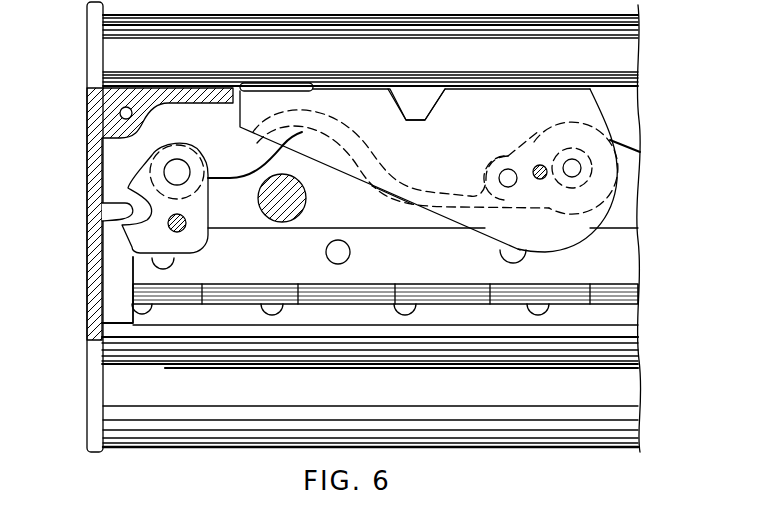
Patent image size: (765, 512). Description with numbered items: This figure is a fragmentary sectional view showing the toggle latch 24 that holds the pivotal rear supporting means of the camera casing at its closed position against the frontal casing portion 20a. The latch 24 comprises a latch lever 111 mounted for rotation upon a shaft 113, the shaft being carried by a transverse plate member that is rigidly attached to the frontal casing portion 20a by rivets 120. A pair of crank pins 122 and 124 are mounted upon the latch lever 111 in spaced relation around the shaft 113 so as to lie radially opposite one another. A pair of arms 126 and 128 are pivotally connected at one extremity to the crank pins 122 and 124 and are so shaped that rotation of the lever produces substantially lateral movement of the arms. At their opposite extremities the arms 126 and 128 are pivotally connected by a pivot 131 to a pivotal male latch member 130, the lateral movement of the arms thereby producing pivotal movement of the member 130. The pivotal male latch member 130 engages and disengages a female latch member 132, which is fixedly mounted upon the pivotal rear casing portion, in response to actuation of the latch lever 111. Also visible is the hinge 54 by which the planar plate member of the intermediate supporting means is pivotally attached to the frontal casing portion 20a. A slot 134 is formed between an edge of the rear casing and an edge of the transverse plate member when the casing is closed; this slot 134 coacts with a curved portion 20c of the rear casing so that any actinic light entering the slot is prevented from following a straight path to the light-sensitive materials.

The frontal casing portion 20a is at (88, 191).
The curved portion of casing 20c is at (628, 335).
The toggle latch 24 is at (118, 175).
The hinge 54 is at (366, 283).
The latch lever 111 is at (344, 95).
The shaft 113 is at (539, 165).
The rivets 120 is at (520, 254).
The crank pin 122 is at (496, 174).
The crank pin 124 is at (584, 177).
The arm 126 is at (229, 160).
The arm 128 is at (625, 136).
The pivotal male latch member 130 is at (197, 238).
The pivot 131 is at (172, 170).
The female latch member 132 is at (108, 232).
The slot 134 is at (618, 323).